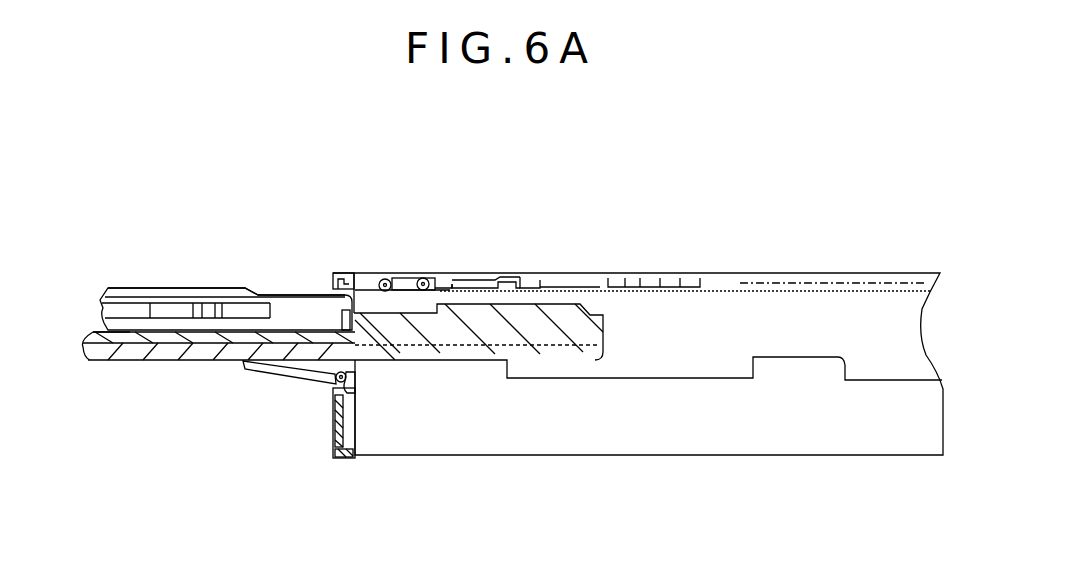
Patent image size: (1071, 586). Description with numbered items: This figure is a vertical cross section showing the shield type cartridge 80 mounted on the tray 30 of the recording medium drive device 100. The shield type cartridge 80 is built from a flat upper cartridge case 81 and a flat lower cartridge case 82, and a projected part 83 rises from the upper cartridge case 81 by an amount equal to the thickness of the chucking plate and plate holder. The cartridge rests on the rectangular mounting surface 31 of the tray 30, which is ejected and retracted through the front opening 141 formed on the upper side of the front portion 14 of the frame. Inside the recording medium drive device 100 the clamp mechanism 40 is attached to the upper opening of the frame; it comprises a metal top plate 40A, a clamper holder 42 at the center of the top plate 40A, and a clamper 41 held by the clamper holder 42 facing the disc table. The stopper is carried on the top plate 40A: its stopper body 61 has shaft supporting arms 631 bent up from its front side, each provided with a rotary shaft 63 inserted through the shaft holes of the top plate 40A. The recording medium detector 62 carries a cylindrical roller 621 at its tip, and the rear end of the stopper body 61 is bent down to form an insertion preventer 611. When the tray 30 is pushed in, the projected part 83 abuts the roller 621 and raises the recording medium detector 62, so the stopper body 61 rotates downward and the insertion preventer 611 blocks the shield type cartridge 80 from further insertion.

The front portion 14 is at (330, 448).
The front opening 141 is at (322, 392).
The tray 30 is at (106, 374).
The mounting surface 31 is at (100, 331).
The clamp mechanism 40 is at (712, 224).
The top plate 40A is at (547, 274).
The clamper 41 is at (648, 275).
The clamper holder 42 is at (753, 287).
The stopper body 61 is at (492, 277).
The insertion preventer 611 is at (520, 278).
The recording medium detector 62 is at (402, 283).
The roller 621 is at (380, 278).
The rotary shaft 63 is at (420, 282).
The shaft supporting arm 631 is at (402, 346).
The shield type cartridge 80 is at (92, 288).
The upper cartridge case 81 is at (295, 293).
The lower cartridge case 82 is at (233, 361).
The projected part 83 is at (255, 290).
The recording medium drive device 100 is at (661, 468).